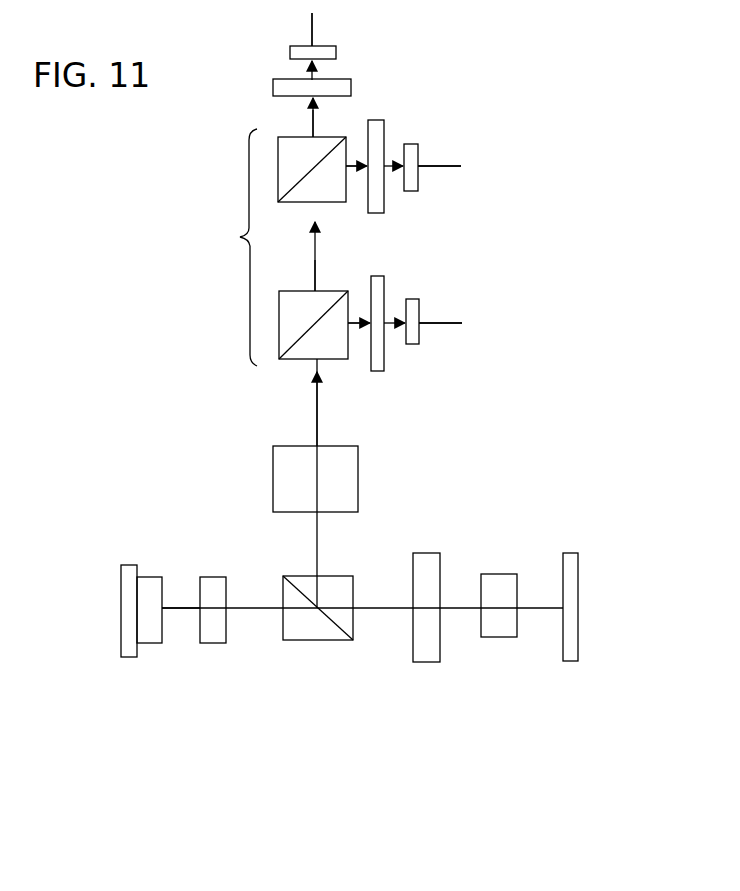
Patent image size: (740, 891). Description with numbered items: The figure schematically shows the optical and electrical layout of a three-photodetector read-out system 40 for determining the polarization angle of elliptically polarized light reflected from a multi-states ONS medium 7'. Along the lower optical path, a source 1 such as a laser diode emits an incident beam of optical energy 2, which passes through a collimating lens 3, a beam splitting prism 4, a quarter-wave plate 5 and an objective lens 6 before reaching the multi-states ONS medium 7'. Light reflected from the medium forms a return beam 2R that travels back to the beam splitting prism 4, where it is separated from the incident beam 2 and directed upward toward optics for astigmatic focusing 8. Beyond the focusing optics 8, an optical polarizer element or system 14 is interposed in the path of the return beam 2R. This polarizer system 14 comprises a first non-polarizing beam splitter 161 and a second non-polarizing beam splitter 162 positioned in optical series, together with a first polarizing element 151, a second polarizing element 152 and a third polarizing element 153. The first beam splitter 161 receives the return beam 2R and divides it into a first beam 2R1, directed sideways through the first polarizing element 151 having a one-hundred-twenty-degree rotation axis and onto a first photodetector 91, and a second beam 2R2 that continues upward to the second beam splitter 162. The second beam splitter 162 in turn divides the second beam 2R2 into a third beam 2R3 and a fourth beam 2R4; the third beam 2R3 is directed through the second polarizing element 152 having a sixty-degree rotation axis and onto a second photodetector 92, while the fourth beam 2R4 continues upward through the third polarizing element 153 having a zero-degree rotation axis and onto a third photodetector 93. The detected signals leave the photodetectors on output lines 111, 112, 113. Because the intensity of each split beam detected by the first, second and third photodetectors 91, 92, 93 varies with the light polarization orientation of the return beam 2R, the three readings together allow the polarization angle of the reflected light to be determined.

The source of an incident beam of optical energy 1 is at (152, 648).
The incident beam of optical energy 2 is at (182, 617).
The collimating lens 3 is at (218, 648).
The beam splitting prism 4 is at (314, 645).
The quarter-wave plate 5 is at (430, 665).
The objective lens 6 is at (502, 640).
The multi-states ONS medium 7' is at (570, 636).
The optics for astigmatic focusing 8 is at (360, 474).
The return beam 2R is at (320, 425).
The optical polarizer element or system 14 is at (236, 247).
The 3-photodetector read-out system 40 is at (195, 340).
The first non-polarizing beam splitter 161 is at (334, 361).
The second non-polarizing beam splitter 162 is at (332, 204).
The first polarizing element 151 is at (386, 352).
The second polarizing element 152 is at (386, 200).
The third polarizing element 153 is at (353, 88).
The first photodetector 91 is at (421, 335).
The second photodetector 92 is at (420, 182).
The third photodetector 93 is at (338, 51).
The output line 111 is at (463, 318).
The output line 112 is at (451, 158).
The output line 113 is at (314, 24).
The first beam 2R1 is at (355, 328).
The second beam 2R2 is at (319, 278).
The third beam 2R3 is at (352, 172).
The fourth beam 2R4 is at (311, 128).